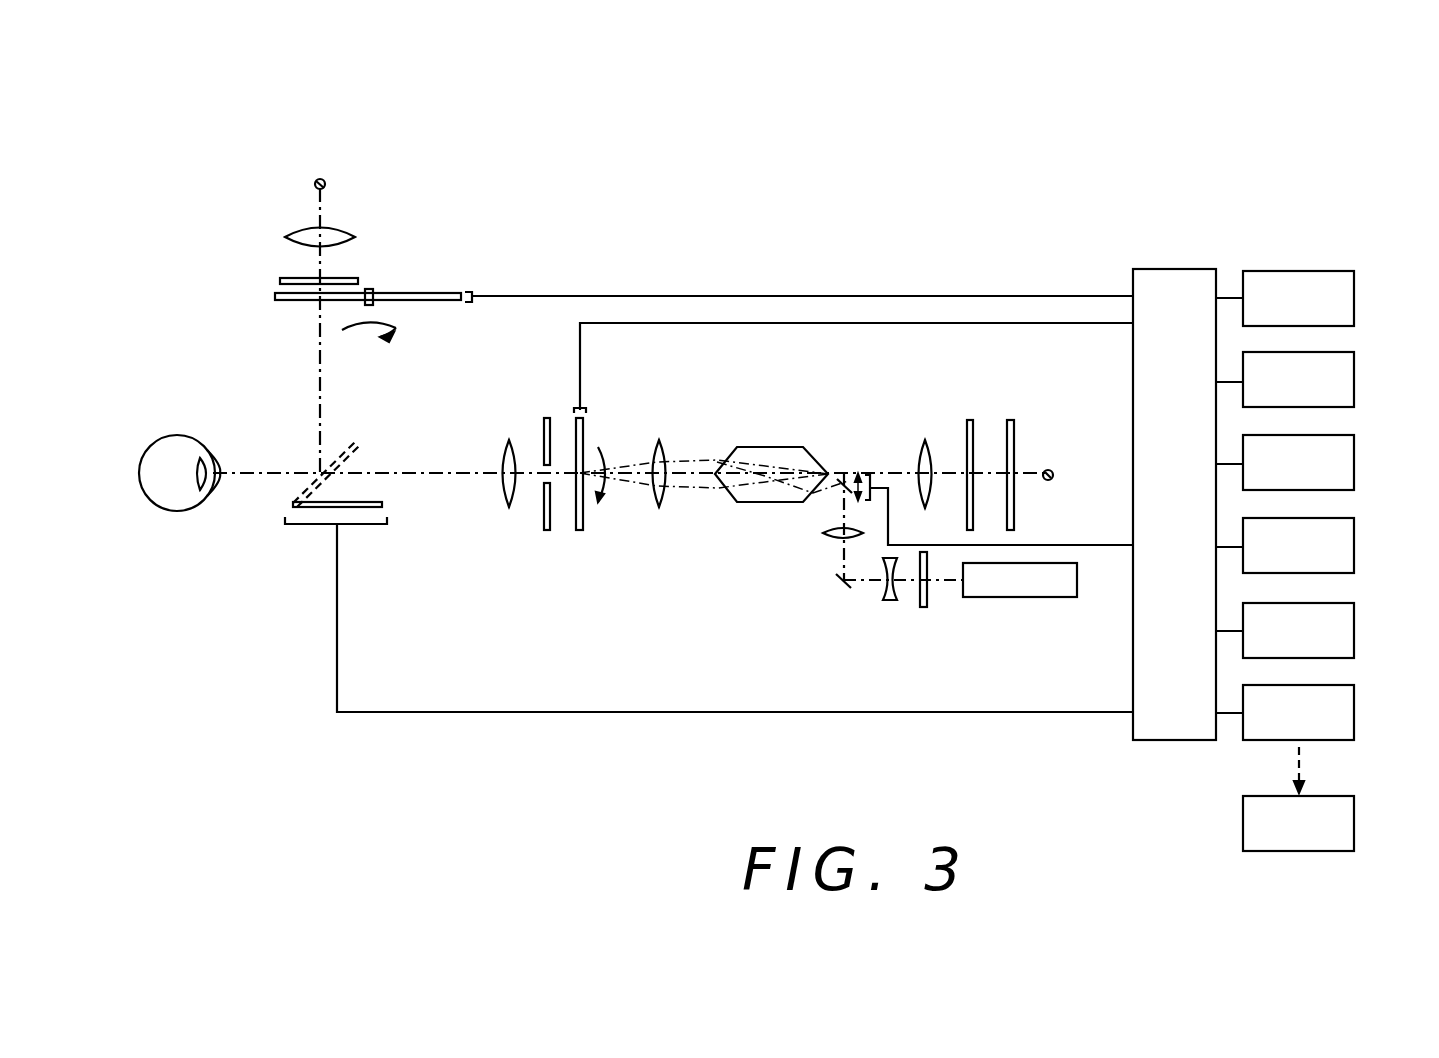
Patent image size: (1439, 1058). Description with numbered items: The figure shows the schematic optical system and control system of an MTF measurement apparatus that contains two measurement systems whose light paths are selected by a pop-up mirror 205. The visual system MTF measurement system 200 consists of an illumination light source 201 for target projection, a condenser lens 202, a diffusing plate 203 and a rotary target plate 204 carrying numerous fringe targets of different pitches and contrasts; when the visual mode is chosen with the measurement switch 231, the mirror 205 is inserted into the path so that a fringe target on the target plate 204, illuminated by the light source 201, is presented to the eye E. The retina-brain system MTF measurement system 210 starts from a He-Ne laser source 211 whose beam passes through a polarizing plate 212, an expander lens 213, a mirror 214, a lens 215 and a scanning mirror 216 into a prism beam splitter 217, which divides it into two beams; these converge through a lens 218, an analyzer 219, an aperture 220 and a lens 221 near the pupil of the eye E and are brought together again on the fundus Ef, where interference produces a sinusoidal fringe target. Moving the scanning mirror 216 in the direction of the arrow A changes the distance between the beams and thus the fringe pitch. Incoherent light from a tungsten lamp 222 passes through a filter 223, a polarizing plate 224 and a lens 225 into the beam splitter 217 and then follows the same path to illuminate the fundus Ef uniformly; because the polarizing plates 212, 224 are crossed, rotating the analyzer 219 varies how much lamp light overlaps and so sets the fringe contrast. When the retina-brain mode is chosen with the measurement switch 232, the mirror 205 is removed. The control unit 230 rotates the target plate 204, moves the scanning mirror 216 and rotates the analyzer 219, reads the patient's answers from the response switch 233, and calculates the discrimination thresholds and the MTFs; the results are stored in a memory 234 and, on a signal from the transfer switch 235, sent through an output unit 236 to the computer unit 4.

The visual system MTF measurement system 200 is at (455, 218).
The illumination light source 201 is at (314, 183).
The condenser lens 202 is at (303, 233).
The diffusing plate 203 is at (290, 282).
The rotary target plate 204 is at (282, 297).
The mirror 205 is at (293, 503).
The retina-brain system MTF measurement system 210 is at (512, 634).
The He-Ne laser source 211 is at (1040, 587).
The polarizing plate 212 is at (927, 600).
The expander lens 213 is at (890, 600).
The mirror 214 is at (840, 590).
The lens 215 is at (833, 528).
The scanning mirror 216 is at (845, 475).
The prism beam splitter 217 is at (763, 457).
The lens 218 is at (658, 503).
The analyzer 219 is at (580, 532).
The aperture 220 is at (545, 421).
The lens 221 is at (508, 504).
The tungsten lamp 222 is at (1050, 473).
The filter 223 is at (1012, 420).
The polarizing plate 224 is at (972, 420).
The lens 225 is at (923, 450).
The control unit 230 is at (1162, 715).
The measurement switch 231 is at (1343, 282).
The measurement switch 232 is at (1343, 364).
The response switch 233 is at (1343, 447).
The memory 234 is at (1343, 530).
The transfer switch 235 is at (1343, 614).
The output unit 236 is at (1343, 697).
The computer unit 4 is at (1343, 822).
The eye E is at (175, 512).
The fundus Ef is at (140, 484).
The arrow A is at (860, 503).